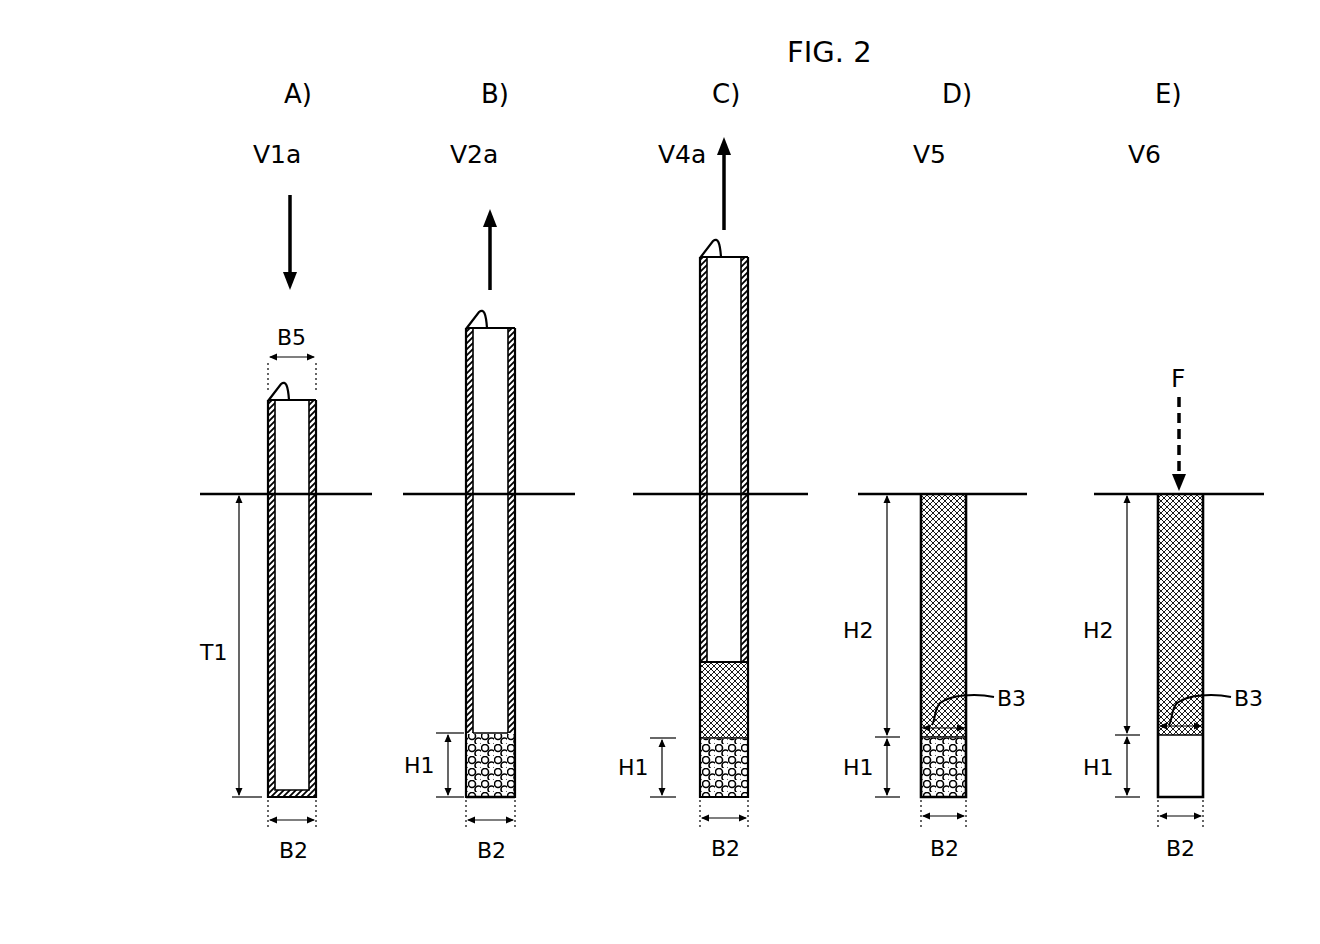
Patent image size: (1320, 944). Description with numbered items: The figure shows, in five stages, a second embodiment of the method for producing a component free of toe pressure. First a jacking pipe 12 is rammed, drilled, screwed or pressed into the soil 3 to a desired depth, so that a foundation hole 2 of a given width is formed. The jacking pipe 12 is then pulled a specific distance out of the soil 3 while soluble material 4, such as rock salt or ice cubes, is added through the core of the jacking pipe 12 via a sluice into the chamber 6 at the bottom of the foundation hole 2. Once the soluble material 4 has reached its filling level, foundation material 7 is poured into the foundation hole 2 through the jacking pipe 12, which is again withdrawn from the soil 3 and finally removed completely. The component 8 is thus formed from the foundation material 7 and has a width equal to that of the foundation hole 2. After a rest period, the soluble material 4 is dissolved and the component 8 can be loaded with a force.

The foundation hole 2 is at (311, 677).
The soil 3 is at (340, 515).
The soluble material 4 is at (494, 762).
The chamber 6 is at (492, 743).
The foundation material 7 is at (715, 675).
The component 8 is at (948, 624).
The jacking pipe 12 is at (268, 463).